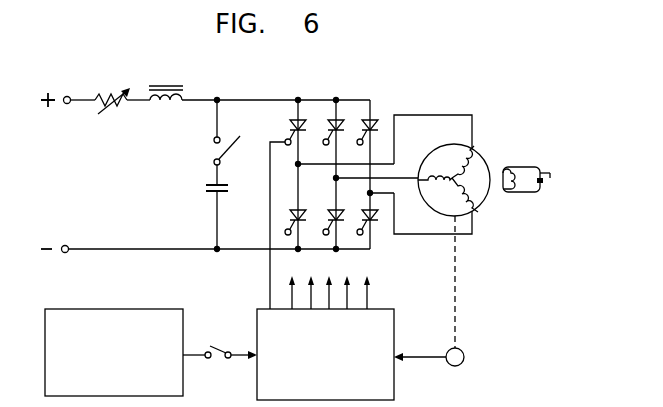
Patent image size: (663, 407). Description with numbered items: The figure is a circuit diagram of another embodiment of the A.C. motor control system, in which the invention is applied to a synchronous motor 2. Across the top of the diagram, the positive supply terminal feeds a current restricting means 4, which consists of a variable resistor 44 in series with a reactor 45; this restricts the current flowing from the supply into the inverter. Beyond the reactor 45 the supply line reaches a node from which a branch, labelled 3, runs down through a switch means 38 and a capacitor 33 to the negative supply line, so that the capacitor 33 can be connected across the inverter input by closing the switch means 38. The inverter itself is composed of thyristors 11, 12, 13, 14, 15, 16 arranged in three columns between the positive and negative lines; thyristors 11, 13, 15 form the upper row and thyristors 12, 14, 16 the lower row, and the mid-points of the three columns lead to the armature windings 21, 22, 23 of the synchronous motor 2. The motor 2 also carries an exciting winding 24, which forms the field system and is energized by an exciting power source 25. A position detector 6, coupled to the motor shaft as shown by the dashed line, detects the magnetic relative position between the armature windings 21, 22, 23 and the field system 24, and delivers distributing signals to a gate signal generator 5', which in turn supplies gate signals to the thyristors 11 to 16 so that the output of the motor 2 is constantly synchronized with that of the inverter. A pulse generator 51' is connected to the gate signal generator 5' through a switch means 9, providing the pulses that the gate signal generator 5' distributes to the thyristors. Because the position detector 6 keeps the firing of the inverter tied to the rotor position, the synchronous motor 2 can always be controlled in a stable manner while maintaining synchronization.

The synchronous motor 2 is at (437, 108).
The filter circuit 3 is at (225, 74).
The current restricting means 4 is at (116, 100).
The gate signal generator 5' is at (339, 338).
The position detector 6 is at (464, 358).
The switch means 9 is at (218, 345).
The thyristor 11 is at (294, 120).
The thyristor 12 is at (292, 222).
The thyristor 13 is at (332, 120).
The thyristor 14 is at (330, 222).
The thyristor 15 is at (368, 120).
The thyristor 16 is at (363, 222).
The armature winding 21 is at (480, 166).
The armature winding 22 is at (436, 168).
The armature winding 23 is at (478, 196).
The exciting winding 24 is at (520, 167).
The exciting power source 25 is at (568, 178).
The capacitor 33 is at (206, 188).
The switch means 38 is at (233, 140).
The variable resistor 44 is at (120, 104).
The reactor 45 is at (173, 105).
The pulse generator 51' is at (114, 329).